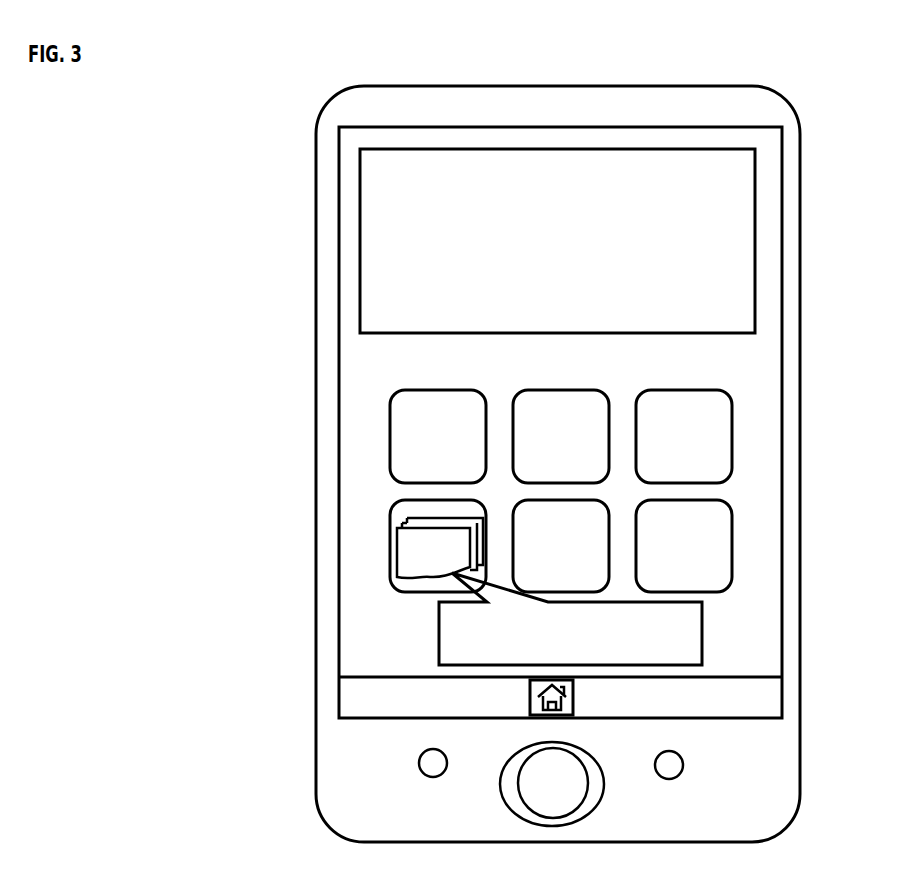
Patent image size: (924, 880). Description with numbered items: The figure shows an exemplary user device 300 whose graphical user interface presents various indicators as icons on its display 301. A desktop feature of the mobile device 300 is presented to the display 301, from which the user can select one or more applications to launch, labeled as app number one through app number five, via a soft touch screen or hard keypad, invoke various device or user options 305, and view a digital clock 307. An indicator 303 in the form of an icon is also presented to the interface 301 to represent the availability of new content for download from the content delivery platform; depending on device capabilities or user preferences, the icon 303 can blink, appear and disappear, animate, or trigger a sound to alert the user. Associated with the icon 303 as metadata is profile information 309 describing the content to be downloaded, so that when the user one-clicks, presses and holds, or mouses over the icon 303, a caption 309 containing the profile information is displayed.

The user device 300 is at (897, 103).
The display 301 is at (338, 187).
The indicator 303 is at (397, 545).
The options 305 is at (345, 697).
The digital clock 307 is at (755, 297).
The profile information 309 is at (713, 635).